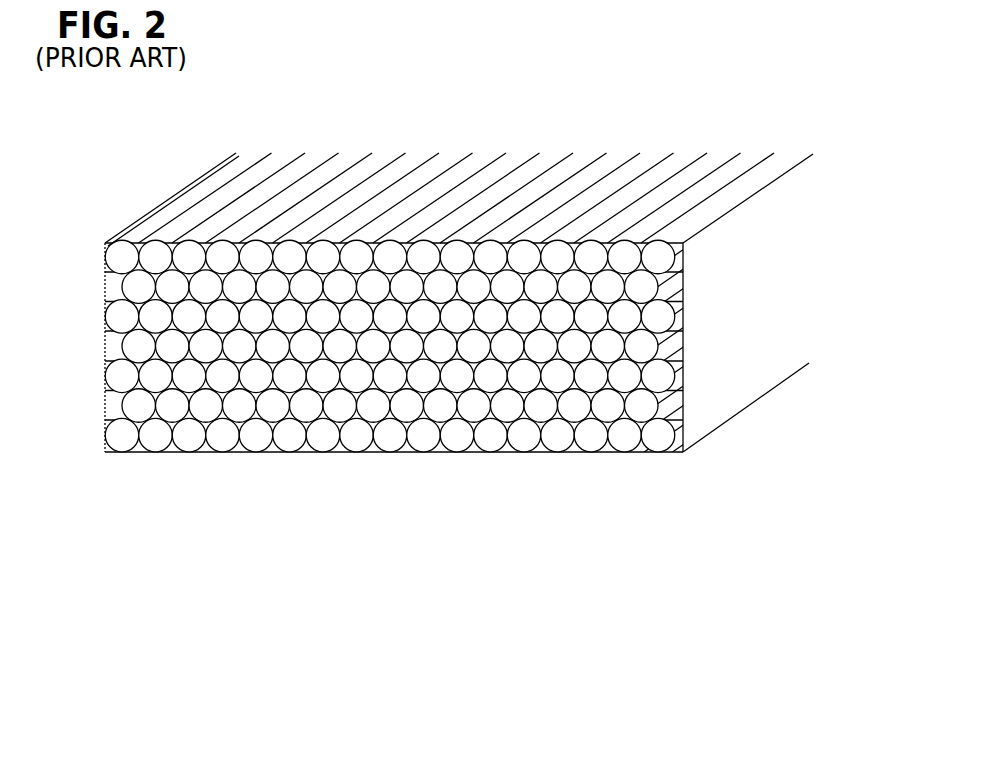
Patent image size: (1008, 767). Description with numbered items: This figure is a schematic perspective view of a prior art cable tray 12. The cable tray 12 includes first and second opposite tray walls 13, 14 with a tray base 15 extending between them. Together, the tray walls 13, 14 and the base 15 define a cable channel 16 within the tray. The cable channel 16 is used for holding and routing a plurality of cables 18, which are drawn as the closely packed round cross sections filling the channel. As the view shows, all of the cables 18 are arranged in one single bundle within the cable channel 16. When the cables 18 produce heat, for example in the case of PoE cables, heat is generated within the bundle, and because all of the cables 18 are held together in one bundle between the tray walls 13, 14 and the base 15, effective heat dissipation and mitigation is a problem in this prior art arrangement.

The cable tray 12 is at (455, 306).
The first tray wall 13 is at (122, 348).
The second tray wall 14 is at (732, 407).
The tray base 15 is at (410, 452).
The cable channel 16 is at (147, 200).
The cables 18 is at (328, 180).